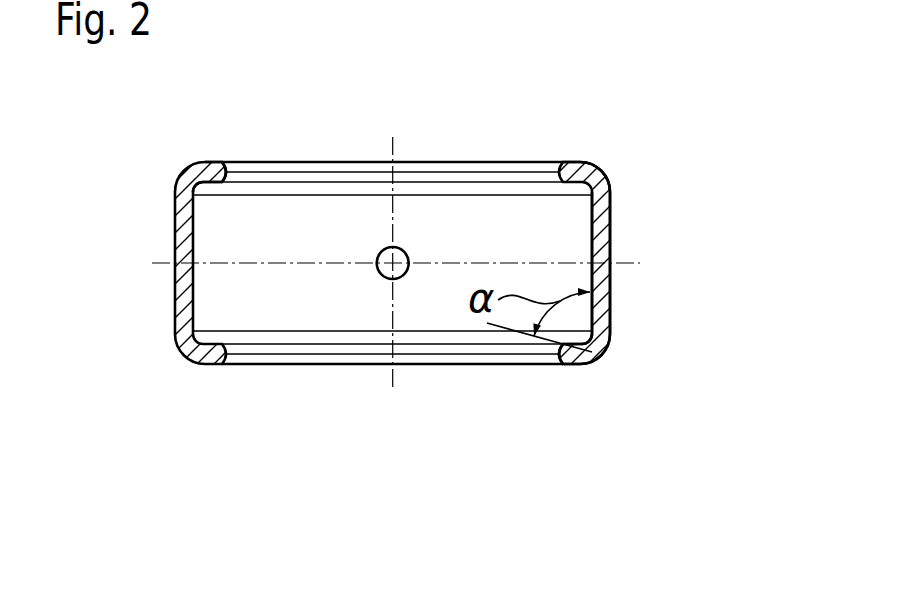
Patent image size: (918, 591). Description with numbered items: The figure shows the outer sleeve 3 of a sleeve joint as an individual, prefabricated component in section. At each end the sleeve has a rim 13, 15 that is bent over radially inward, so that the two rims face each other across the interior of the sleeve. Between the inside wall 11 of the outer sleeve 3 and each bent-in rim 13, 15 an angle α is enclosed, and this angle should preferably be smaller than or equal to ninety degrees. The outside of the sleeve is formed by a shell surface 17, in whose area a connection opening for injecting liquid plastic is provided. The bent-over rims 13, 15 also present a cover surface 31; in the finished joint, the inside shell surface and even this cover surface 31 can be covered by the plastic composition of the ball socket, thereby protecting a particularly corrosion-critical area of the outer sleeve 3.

The outer sleeve 3 is at (676, 330).
The inside wall 11 is at (587, 235).
The rim 13 is at (590, 366).
The rim 15 is at (585, 156).
The shell surface 17 is at (613, 237).
The cover surface 31 is at (242, 187).